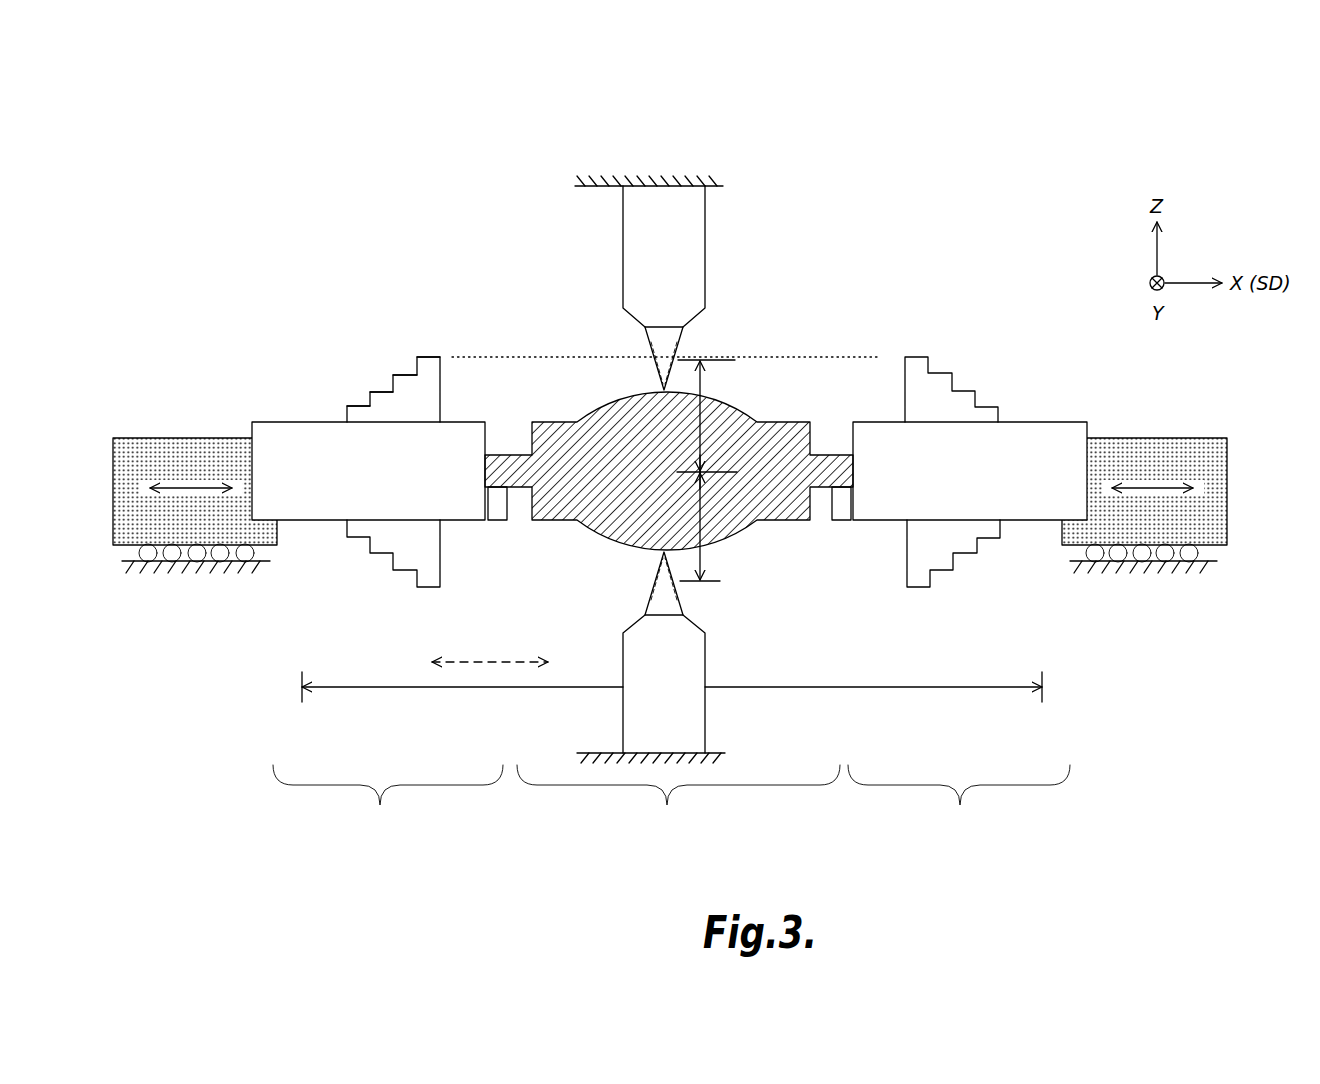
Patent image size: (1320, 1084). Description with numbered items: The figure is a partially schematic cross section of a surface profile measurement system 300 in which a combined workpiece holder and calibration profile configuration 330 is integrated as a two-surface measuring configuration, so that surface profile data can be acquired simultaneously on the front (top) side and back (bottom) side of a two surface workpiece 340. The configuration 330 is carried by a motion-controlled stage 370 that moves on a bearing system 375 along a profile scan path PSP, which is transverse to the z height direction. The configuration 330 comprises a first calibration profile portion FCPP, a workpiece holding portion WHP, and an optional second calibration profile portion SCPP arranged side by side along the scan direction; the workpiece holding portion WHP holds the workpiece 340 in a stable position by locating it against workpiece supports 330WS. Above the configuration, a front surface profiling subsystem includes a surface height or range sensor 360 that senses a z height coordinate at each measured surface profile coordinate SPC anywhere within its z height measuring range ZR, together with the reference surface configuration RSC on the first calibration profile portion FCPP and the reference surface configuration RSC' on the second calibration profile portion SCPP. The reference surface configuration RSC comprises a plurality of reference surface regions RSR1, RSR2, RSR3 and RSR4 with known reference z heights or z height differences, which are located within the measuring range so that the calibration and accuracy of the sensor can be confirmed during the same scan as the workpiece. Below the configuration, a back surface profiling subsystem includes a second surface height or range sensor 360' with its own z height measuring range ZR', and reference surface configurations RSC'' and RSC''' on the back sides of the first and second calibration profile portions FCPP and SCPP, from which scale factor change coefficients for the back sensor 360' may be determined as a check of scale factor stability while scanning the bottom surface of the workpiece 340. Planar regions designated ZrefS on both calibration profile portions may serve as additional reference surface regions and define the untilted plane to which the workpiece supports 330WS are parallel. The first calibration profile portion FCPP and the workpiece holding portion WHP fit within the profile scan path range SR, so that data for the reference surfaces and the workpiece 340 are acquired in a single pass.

The surface profile measurement system 300 is at (1095, 98).
The combined workpiece holder and calibration profile configuration 330 is at (669, 574).
The workpiece support 330WS is at (491, 496).
The two surface workpiece 340 is at (637, 552).
The surface height or range sensor 360 is at (676, 283).
The surface height or range sensor 360' is at (678, 658).
The motion-controlled stage 370 is at (178, 438).
The bearing system 375 is at (152, 592).
The reference surface configuration RSC is at (359, 339).
The reference surface configuration RSC' is at (951, 339).
The reference surface configuration RSC'' is at (390, 573).
The reference surface configuration RSC''' is at (954, 573).
The reference surface region RSR1 is at (347, 405).
The reference surface region RSR2 is at (370, 391).
The reference surface region RSR3 is at (392, 374).
The reference surface region RSR4 is at (415, 356).
The designated planar reference region ZrefS is at (462, 422).
The surface profile coordinate SPC is at (657, 383).
The z height measuring range ZR is at (730, 414).
The z height measuring range ZR' is at (731, 547).
The profile scan path PSP is at (497, 662).
The profile scan path range SR is at (822, 687).
The first calibration profile portion FCPP is at (388, 800).
The workpiece holding portion WHP is at (678, 800).
The second calibration profile portion SCPP is at (959, 800).